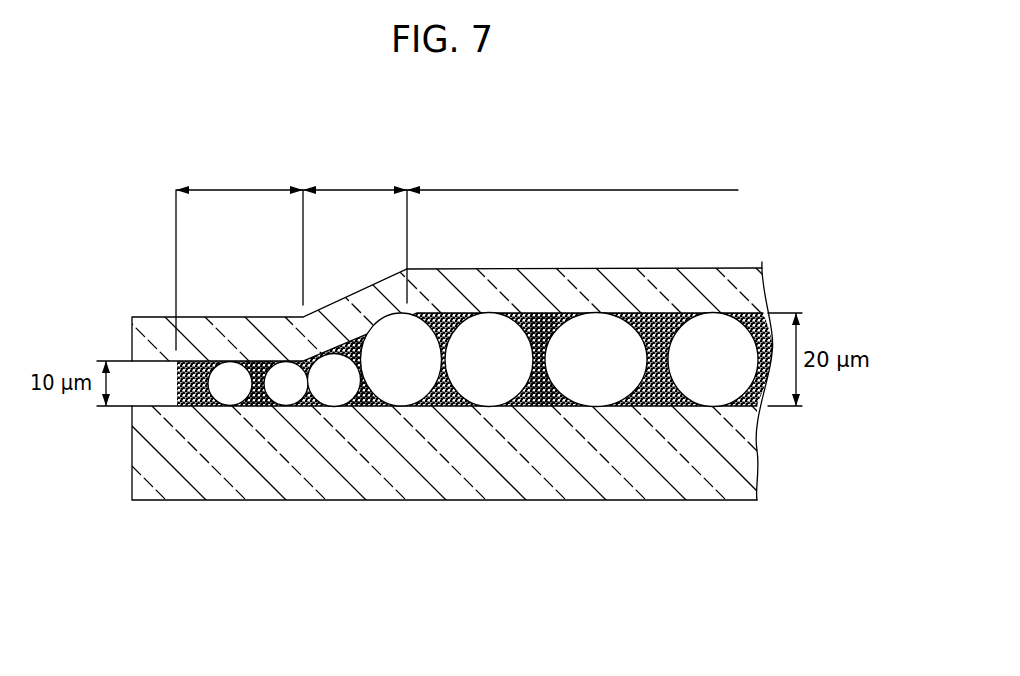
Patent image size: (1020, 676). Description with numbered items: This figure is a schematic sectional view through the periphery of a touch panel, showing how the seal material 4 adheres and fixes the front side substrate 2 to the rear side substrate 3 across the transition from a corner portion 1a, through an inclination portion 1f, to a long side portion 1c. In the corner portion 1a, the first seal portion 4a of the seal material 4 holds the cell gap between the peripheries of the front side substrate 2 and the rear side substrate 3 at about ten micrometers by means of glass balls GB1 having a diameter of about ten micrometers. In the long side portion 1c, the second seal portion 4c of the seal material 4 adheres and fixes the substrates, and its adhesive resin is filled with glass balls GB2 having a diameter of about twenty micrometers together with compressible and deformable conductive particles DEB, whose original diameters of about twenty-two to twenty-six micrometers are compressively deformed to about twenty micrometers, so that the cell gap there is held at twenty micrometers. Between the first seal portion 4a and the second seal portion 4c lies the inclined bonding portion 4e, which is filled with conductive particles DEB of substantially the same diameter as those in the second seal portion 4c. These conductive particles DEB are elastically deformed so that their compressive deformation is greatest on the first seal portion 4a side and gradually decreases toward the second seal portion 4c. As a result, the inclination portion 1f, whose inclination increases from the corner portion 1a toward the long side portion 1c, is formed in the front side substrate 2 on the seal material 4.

The front side substrate 2 is at (588, 278).
The rear side substrate 3 is at (195, 464).
The seal material 4 is at (660, 392).
The first seal portion 4a is at (258, 404).
The second seal portion 4c is at (540, 404).
The inclined bonding portion 4e is at (360, 393).
The corner portion 1a is at (239, 241).
The long side portion 1c is at (572, 163).
The inclination portion 1f is at (358, 188).
The glass balls GB1 is at (233, 390).
The glass balls GB2 is at (495, 381).
The conductive particles DEB is at (335, 390).